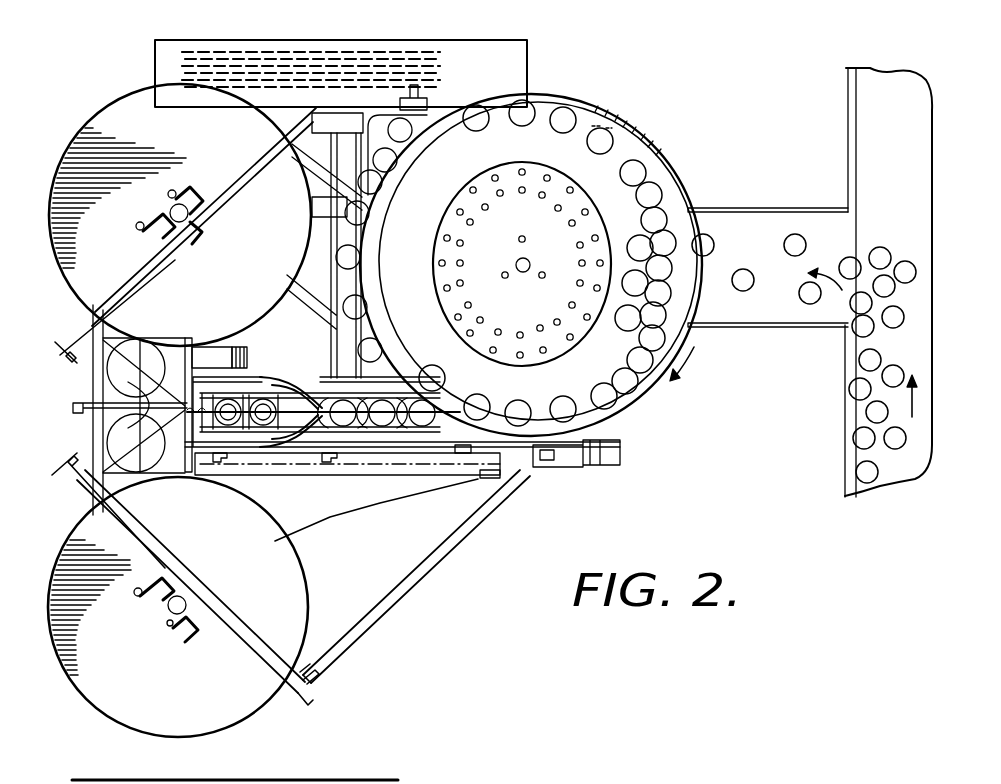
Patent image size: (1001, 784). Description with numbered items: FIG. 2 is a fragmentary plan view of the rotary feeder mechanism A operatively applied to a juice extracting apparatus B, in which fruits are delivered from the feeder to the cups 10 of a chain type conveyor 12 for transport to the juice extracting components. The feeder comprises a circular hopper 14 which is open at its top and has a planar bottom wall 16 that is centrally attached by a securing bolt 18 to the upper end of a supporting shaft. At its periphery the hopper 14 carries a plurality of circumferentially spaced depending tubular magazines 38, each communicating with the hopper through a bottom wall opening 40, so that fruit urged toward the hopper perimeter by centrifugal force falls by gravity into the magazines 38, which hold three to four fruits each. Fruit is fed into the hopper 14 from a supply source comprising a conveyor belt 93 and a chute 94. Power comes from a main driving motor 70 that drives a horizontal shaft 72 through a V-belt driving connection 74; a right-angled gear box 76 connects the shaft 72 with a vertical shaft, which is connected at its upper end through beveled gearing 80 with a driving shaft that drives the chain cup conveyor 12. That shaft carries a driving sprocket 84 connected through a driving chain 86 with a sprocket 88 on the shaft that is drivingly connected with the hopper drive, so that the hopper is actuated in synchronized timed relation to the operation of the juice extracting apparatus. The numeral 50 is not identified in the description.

The rotary feeder mechanism A is at (531, 243).
The juice extracting apparatus B is at (341, 71).
The cups 10 is at (366, 398).
The chain type conveyor 12 is at (365, 430).
The circular hopper 14 is at (630, 112).
The planar bottom wall 16 is at (398, 249).
The securing bolt 18 is at (516, 263).
The tubular magazines 38 is at (345, 234).
The bottom wall opening 40 is at (606, 130).
The apertures in drum plate 50 is at (486, 205).
The main driving motor 70 is at (388, 125).
The horizontal shaft 72 is at (230, 86).
The V-belt driving connection 74 is at (356, 58).
The right-angled gear box 76 is at (255, 345).
The beveled gearing 80 is at (210, 347).
The driving sprocket 84 is at (208, 480).
The driving chain 86 is at (283, 476).
The sprocket 88 is at (478, 482).
The conveyor belt 93 is at (893, 482).
The chute 94 is at (768, 328).